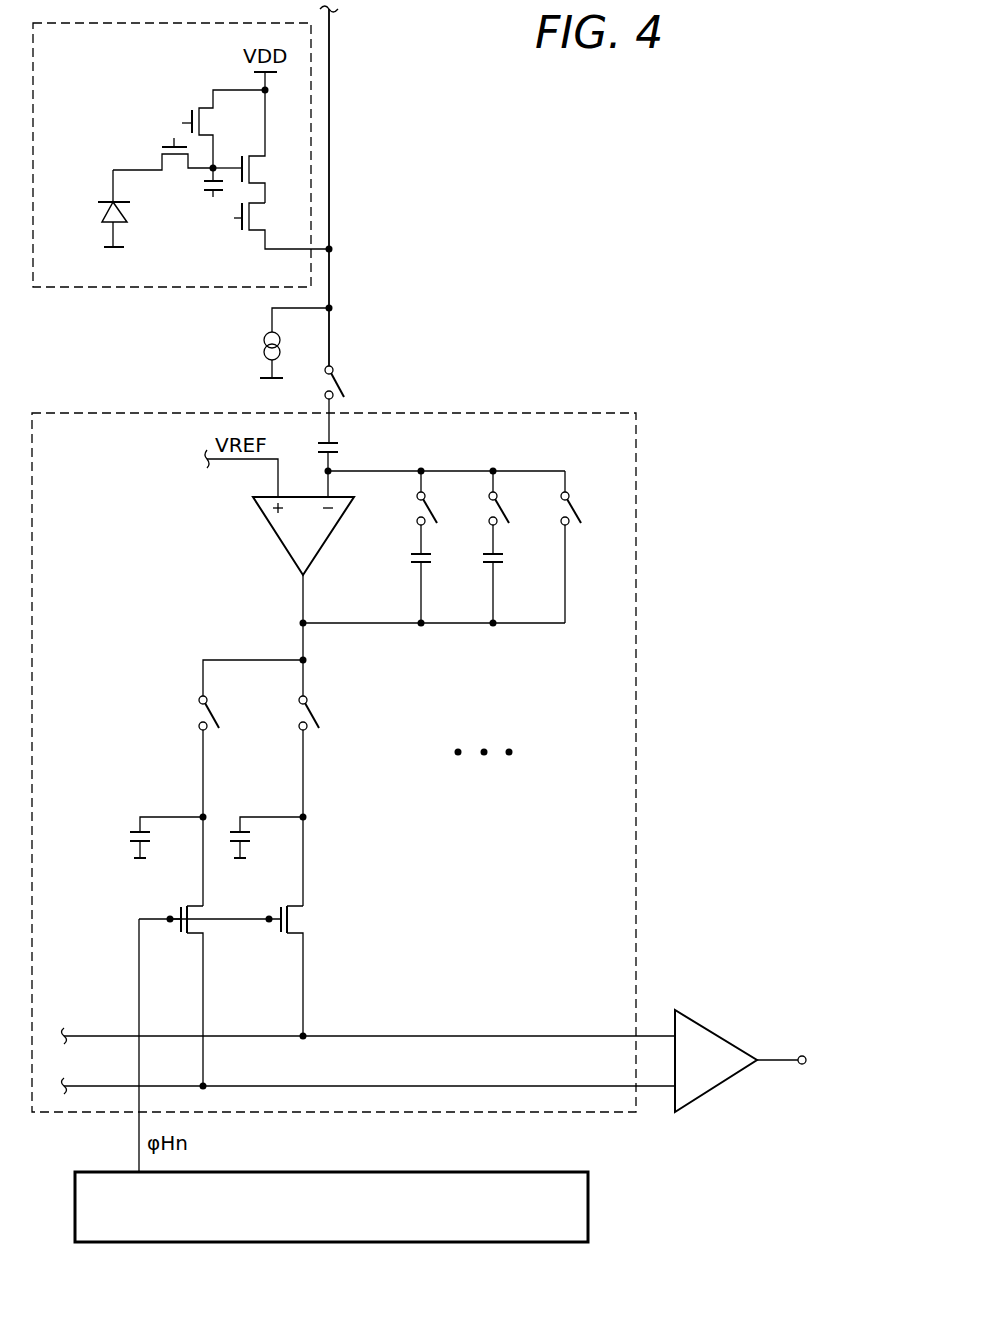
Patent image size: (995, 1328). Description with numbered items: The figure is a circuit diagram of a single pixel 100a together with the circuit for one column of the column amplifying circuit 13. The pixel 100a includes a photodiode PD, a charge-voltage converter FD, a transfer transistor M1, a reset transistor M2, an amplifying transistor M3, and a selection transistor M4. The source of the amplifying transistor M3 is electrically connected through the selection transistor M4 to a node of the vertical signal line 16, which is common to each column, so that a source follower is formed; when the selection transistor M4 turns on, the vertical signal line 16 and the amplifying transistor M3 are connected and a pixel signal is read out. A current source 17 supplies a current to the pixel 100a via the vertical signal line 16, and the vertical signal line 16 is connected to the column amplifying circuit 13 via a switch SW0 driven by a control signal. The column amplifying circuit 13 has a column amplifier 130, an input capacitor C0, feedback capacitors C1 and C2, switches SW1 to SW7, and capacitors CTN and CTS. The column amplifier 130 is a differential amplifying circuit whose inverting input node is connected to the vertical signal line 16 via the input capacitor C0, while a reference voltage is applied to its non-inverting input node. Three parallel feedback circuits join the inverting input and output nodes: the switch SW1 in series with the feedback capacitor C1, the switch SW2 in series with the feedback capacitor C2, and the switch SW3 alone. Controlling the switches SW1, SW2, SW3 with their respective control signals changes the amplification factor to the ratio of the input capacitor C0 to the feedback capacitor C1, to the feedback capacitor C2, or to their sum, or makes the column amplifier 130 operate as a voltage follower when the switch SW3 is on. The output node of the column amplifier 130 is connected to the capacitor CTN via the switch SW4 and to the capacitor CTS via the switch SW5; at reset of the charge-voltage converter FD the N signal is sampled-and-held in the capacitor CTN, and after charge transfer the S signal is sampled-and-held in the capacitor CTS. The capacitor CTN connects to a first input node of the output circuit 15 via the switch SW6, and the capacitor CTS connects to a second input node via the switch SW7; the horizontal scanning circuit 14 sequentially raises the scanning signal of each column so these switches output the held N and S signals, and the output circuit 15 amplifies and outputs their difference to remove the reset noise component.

The pixel 100a is at (68, 287).
The vertical signal line 16 is at (331, 137).
The current source 17 is at (263, 340).
The column amplifying circuit 13 is at (637, 647).
The column amplifier 130 is at (274, 538).
The output circuit 15 is at (717, 1032).
The horizontal scanning circuit 14 is at (590, 1207).
The transfer transistor M1 is at (168, 142).
The reset transistor M2 is at (187, 117).
The amplifying transistor M3 is at (238, 182).
The selection transistor M4 is at (238, 225).
The photodiode PD is at (100, 213).
The charge-voltage converter FD is at (203, 183).
The switch SW0 is at (346, 380).
The switch SW1 is at (417, 517).
The switch SW2 is at (490, 517).
The switch SW3 is at (562, 517).
The switch SW4 is at (198, 708).
The switch SW5 is at (340, 697).
The switch SW6 is at (203, 927).
The switch SW7 is at (295, 921).
The input capacitor C0 is at (344, 467).
The feedback capacitor C1 is at (409, 576).
The feedback capacitor C2 is at (482, 576).
The capacitor CTN is at (162, 851).
The capacitor CTS is at (262, 851).